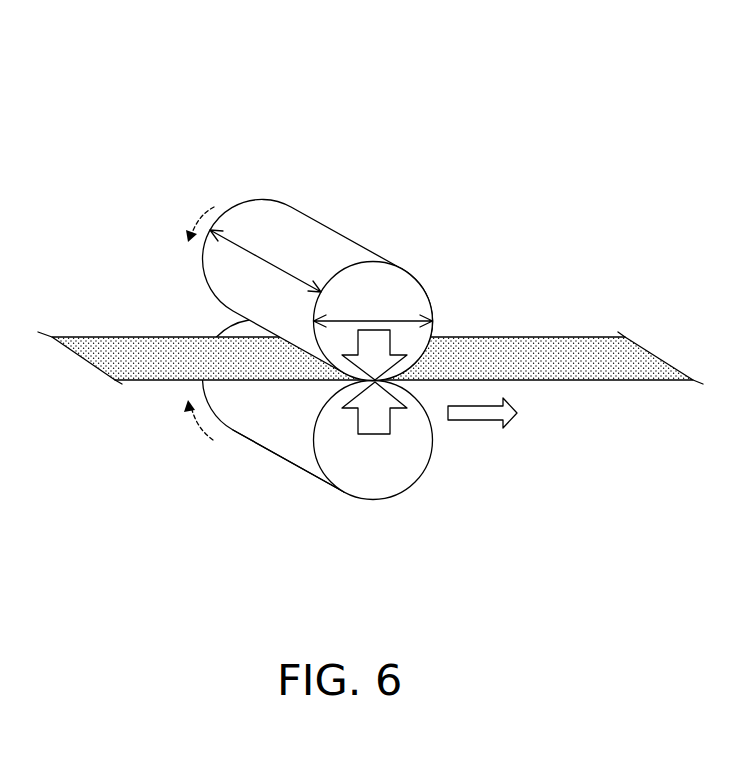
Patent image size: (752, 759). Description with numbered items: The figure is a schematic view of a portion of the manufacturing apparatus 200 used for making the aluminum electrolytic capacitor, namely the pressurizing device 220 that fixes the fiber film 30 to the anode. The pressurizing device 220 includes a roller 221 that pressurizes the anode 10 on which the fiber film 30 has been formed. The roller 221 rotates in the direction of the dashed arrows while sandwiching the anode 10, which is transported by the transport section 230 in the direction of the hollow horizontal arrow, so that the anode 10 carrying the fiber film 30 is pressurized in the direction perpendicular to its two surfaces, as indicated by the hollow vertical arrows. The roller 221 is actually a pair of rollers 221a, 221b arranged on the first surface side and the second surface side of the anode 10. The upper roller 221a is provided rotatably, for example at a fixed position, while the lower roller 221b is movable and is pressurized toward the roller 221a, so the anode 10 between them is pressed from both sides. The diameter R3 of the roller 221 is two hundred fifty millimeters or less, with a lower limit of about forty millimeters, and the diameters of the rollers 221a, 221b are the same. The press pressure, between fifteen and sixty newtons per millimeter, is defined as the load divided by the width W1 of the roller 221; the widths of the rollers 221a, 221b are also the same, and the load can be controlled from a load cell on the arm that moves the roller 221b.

The manufacturing apparatus 200 is at (370, 298).
The pressurizing device 220 is at (370, 338).
The roller 221 is at (370, 359).
The roller 221a is at (250, 213).
The movable roller 221b is at (367, 487).
The anode 10 is at (370, 336).
The fiber film 30 is at (165, 349).
The transport section 230 is at (689, 401).
The width of roller W1 is at (285, 271).
The diameter of roller R3 is at (397, 321).